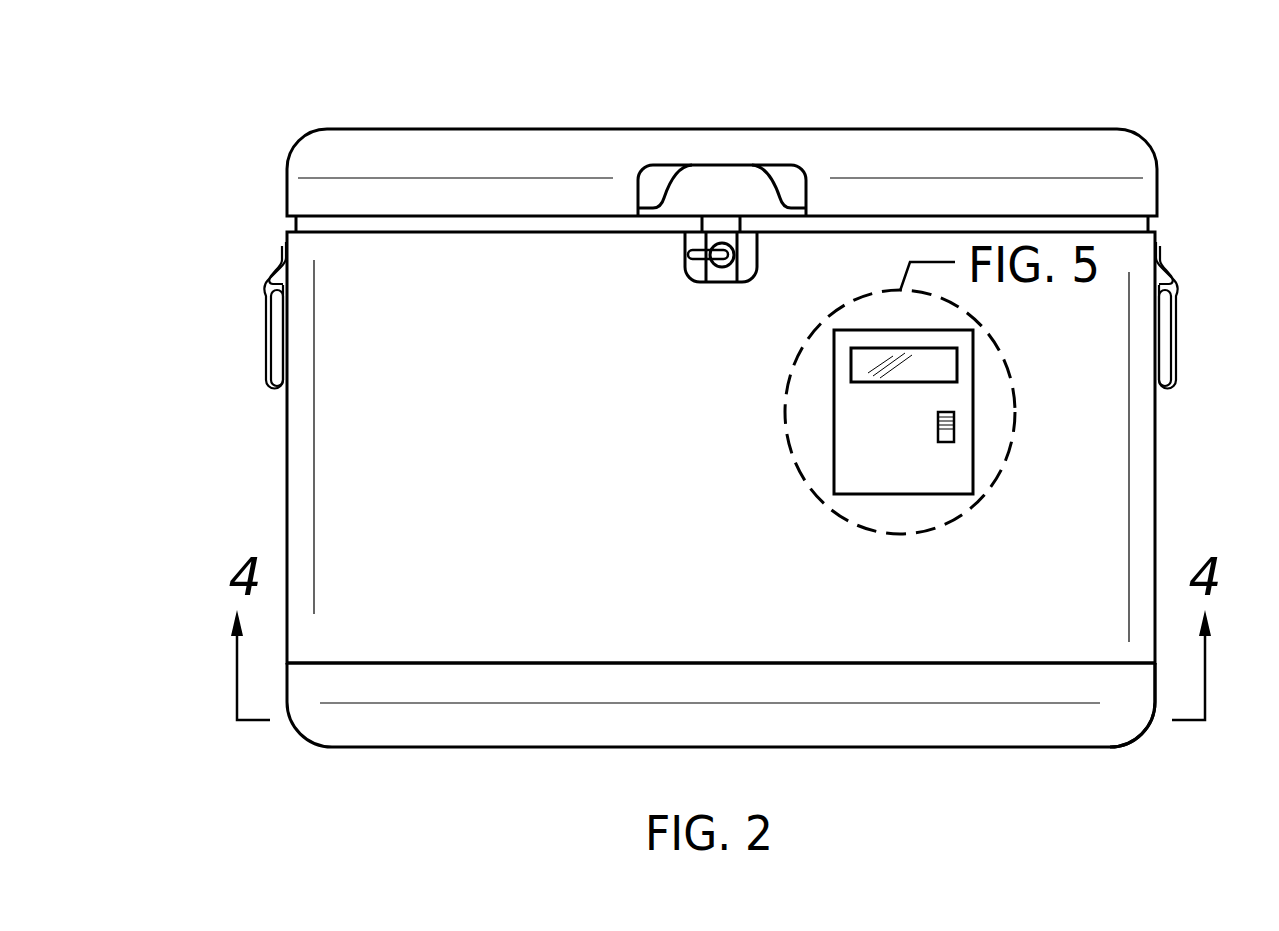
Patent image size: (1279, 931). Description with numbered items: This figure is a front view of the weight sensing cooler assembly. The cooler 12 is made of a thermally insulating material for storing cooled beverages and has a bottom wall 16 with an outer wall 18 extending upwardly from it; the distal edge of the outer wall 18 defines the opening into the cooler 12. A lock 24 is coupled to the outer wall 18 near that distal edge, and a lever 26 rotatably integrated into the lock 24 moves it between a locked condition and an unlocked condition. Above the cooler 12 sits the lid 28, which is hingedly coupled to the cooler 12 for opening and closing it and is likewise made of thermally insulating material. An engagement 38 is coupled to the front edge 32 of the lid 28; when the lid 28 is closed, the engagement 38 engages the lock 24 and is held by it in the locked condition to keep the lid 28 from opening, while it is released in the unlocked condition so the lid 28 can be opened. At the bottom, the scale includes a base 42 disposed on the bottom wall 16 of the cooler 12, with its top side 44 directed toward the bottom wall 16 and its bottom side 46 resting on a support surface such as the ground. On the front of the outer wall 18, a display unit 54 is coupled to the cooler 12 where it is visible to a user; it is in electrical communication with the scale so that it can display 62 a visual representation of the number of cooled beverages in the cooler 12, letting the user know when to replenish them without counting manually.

The cooler 12 is at (287, 443).
The bottom wall 16 is at (513, 663).
The outer wall 18 is at (347, 482).
The lock 24 is at (695, 276).
The lever 26 is at (700, 252).
The lid 28 is at (1105, 129).
The front edge 32 is at (928, 145).
The engagement 38 is at (797, 164).
The base 42 is at (962, 718).
The top side 44 is at (1086, 663).
The bottom side 46 is at (1110, 748).
The display unit 54 is at (1000, 422).
The display 62 is at (957, 365).